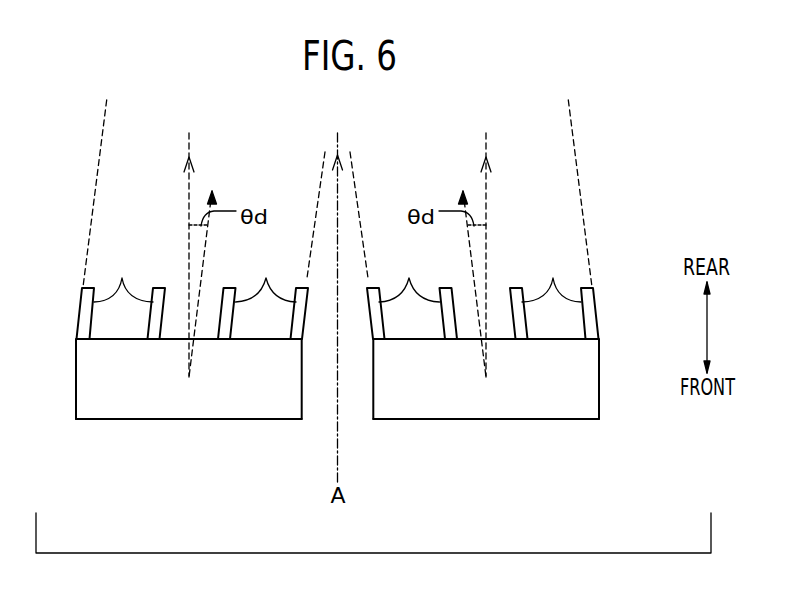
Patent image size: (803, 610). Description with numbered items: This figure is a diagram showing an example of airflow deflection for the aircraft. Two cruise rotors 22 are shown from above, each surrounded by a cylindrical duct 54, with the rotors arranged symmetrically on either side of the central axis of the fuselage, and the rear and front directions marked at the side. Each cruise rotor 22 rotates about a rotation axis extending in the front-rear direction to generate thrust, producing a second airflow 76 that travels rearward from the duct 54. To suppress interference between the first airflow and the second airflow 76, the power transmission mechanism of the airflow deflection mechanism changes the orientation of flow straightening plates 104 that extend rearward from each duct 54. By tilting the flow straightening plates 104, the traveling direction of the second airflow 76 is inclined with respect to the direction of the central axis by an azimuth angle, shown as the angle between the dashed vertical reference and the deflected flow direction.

The cruise rotor 22 is at (210, 419).
The duct 54 is at (138, 408).
The second airflow 76 is at (95, 195).
The flow straightening plate 104 is at (338, 296).